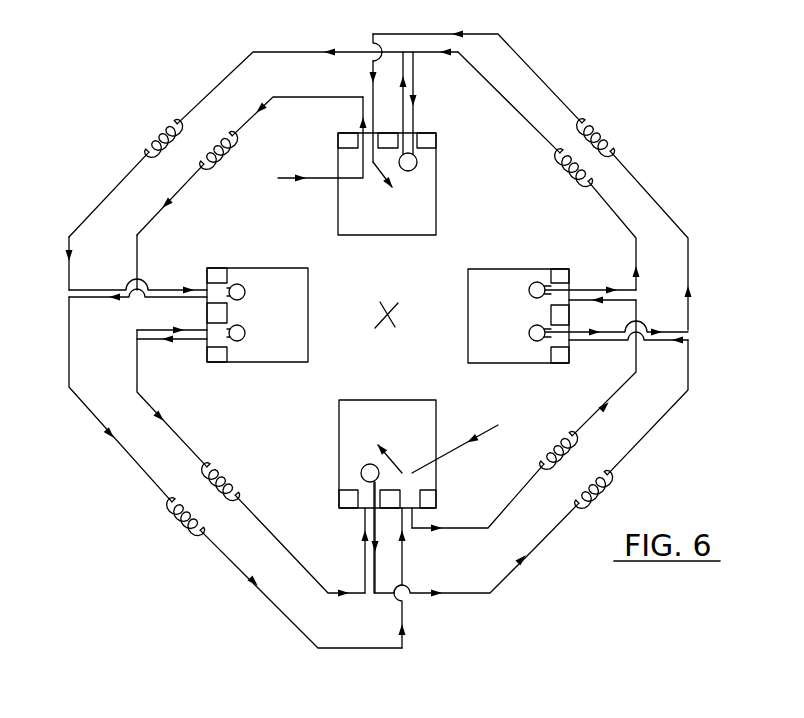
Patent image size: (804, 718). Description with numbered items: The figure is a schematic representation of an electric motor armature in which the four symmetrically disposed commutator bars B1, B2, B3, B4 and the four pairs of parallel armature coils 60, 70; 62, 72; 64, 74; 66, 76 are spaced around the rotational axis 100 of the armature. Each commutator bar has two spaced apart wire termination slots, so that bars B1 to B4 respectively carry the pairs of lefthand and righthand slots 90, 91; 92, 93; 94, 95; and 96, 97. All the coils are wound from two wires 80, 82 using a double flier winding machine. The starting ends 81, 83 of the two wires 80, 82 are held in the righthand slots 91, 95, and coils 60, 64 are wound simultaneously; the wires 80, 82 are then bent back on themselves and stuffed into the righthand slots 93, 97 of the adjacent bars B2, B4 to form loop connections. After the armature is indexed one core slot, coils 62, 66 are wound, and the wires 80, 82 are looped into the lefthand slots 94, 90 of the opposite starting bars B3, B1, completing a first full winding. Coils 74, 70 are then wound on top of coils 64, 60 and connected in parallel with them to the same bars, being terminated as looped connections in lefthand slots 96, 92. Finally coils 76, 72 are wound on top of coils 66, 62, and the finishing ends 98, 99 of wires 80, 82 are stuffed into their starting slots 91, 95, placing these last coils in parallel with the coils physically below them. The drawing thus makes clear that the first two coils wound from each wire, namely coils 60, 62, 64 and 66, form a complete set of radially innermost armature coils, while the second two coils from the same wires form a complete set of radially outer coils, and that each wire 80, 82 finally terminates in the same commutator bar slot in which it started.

The armature coil 60 is at (227, 160).
The armature coil 62 is at (232, 476).
The armature coil 64 is at (556, 430).
The armature coil 66 is at (569, 173).
The armature coil 70 is at (160, 134).
The armature coil 72 is at (185, 528).
The armature coil 74 is at (603, 491).
The armature coil 76 is at (608, 147).
The wire 80 is at (308, 97).
The starting end 81 is at (292, 177).
The wire 82 is at (90, 212).
The starting end 83 is at (449, 452).
The lefthand slot 90 is at (423, 133).
The righthand slot 91 is at (347, 134).
The lefthand slot 92 is at (213, 270).
The righthand slot 93 is at (213, 362).
The lefthand slot 94 is at (350, 509).
The righthand slot 95 is at (437, 500).
The lefthand slot 96 is at (561, 363).
The righthand slot 97 is at (561, 268).
The finishing end 98 is at (383, 180).
The finishing end 99 is at (398, 466).
The rotational axis 100 is at (390, 305).
The commutator bar B1 is at (397, 164).
The commutator bar B2 is at (269, 323).
The commutator bar B3 is at (406, 453).
The commutator bar B4 is at (506, 317).